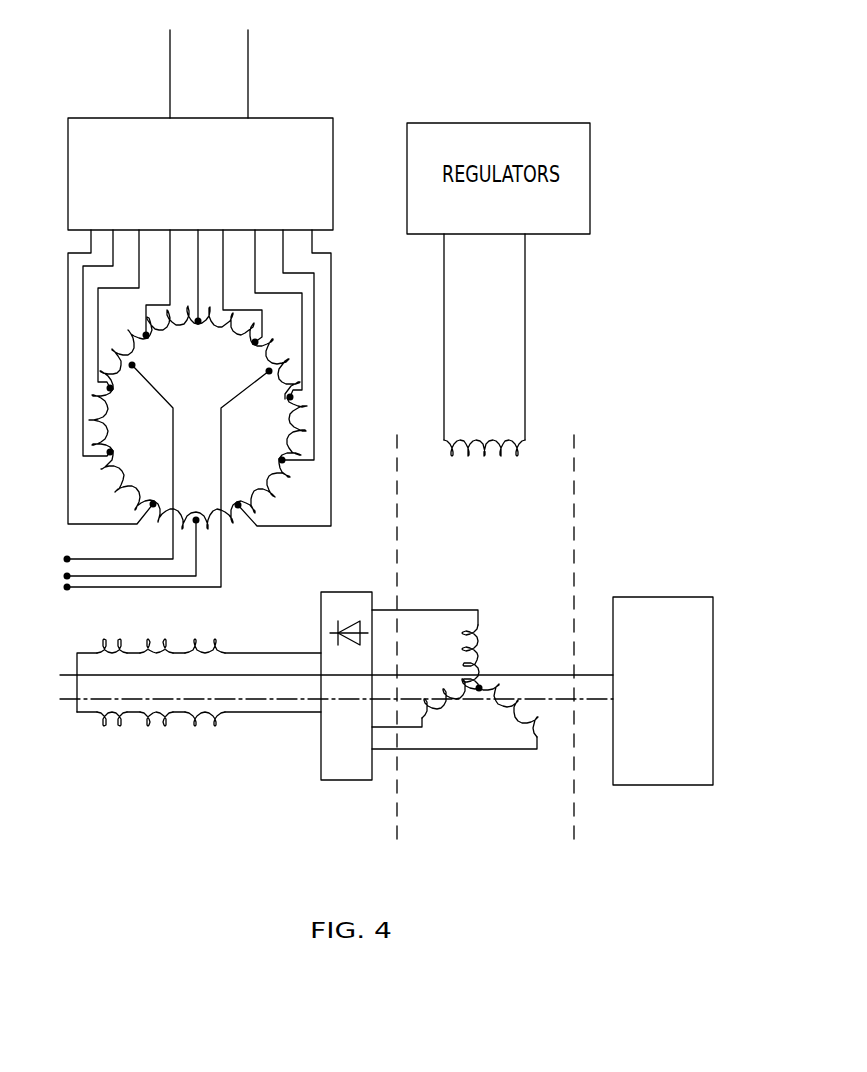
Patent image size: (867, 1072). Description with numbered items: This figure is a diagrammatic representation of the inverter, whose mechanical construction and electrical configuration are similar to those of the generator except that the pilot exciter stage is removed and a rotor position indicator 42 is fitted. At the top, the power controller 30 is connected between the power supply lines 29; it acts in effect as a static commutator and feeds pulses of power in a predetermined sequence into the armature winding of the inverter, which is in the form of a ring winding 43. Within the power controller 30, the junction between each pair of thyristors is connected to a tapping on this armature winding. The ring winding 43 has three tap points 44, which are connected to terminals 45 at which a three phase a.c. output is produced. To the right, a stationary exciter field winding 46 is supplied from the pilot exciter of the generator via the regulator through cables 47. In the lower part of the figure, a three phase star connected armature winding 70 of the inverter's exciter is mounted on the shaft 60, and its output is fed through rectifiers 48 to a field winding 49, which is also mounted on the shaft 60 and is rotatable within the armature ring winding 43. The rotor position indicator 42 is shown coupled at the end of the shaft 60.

The power supply lines 29 is at (238, 68).
The power controller 30 is at (277, 127).
The rotor position indicator 42 is at (663, 608).
The ring winding 43 is at (302, 428).
The tap points 44 is at (135, 361).
The terminals 45 is at (68, 592).
The stationary exciter field winding 46 is at (480, 457).
The cables 47 is at (515, 283).
The rectifiers 48 is at (330, 772).
The field winding 49 is at (170, 722).
The shaft 60 is at (596, 698).
The three phase star connected armature winding 70 is at (481, 712).